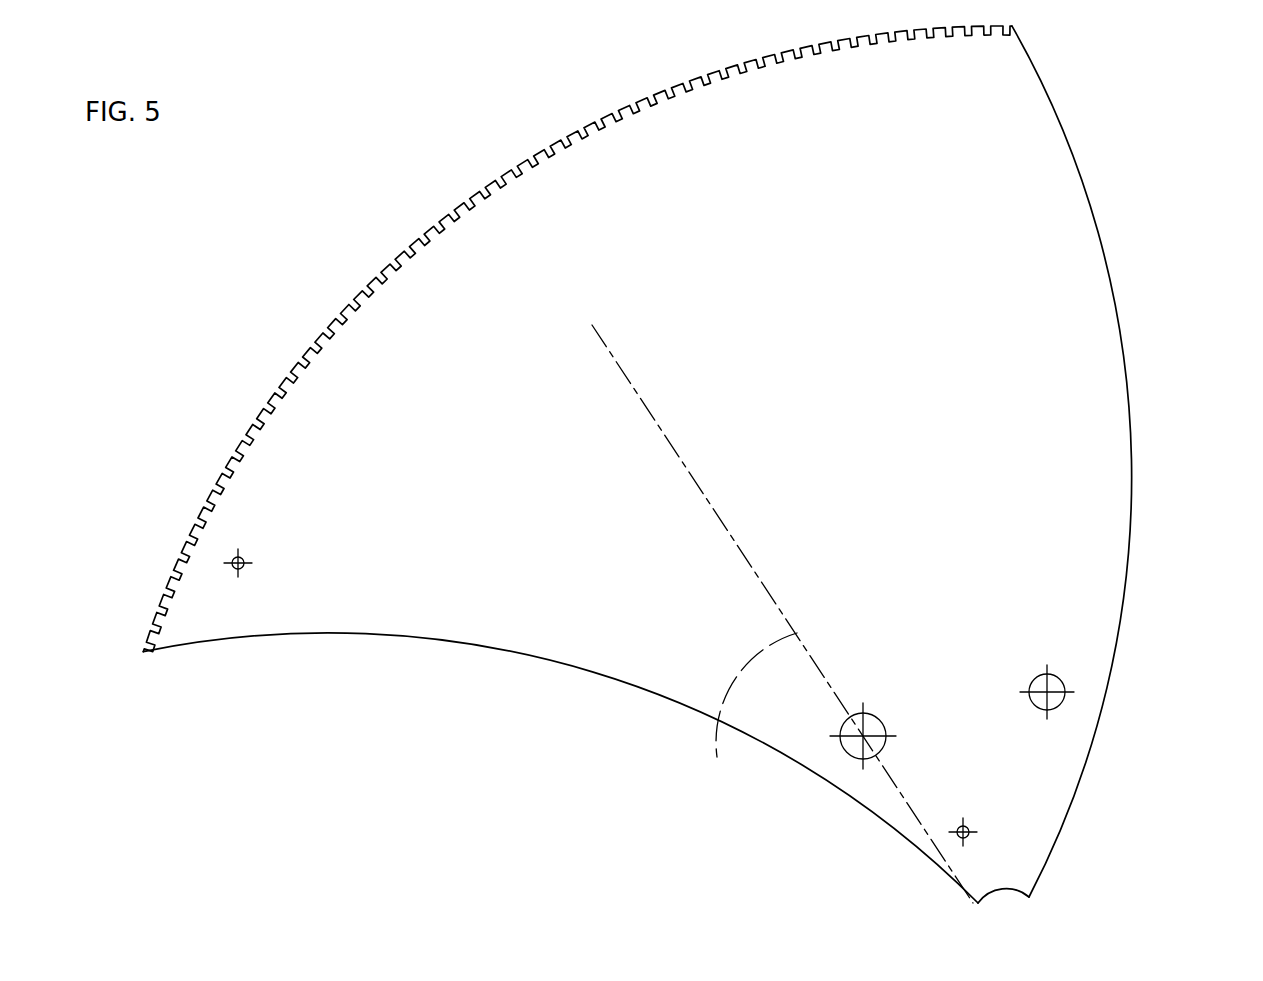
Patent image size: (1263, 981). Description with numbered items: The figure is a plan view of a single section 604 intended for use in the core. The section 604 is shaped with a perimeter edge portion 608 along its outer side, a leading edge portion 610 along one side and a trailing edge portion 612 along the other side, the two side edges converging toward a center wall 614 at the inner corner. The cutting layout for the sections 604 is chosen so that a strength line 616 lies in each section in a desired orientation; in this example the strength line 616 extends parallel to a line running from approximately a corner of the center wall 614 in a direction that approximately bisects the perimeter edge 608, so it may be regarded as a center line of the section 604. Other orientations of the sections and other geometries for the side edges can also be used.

The section 604 is at (252, 255).
The perimeter edge portion 608 is at (440, 183).
The leading edge portion 610 is at (1118, 323).
The trailing edge portion 612 is at (353, 636).
The center wall 614 is at (1002, 892).
The strength line 616 is at (782, 614).